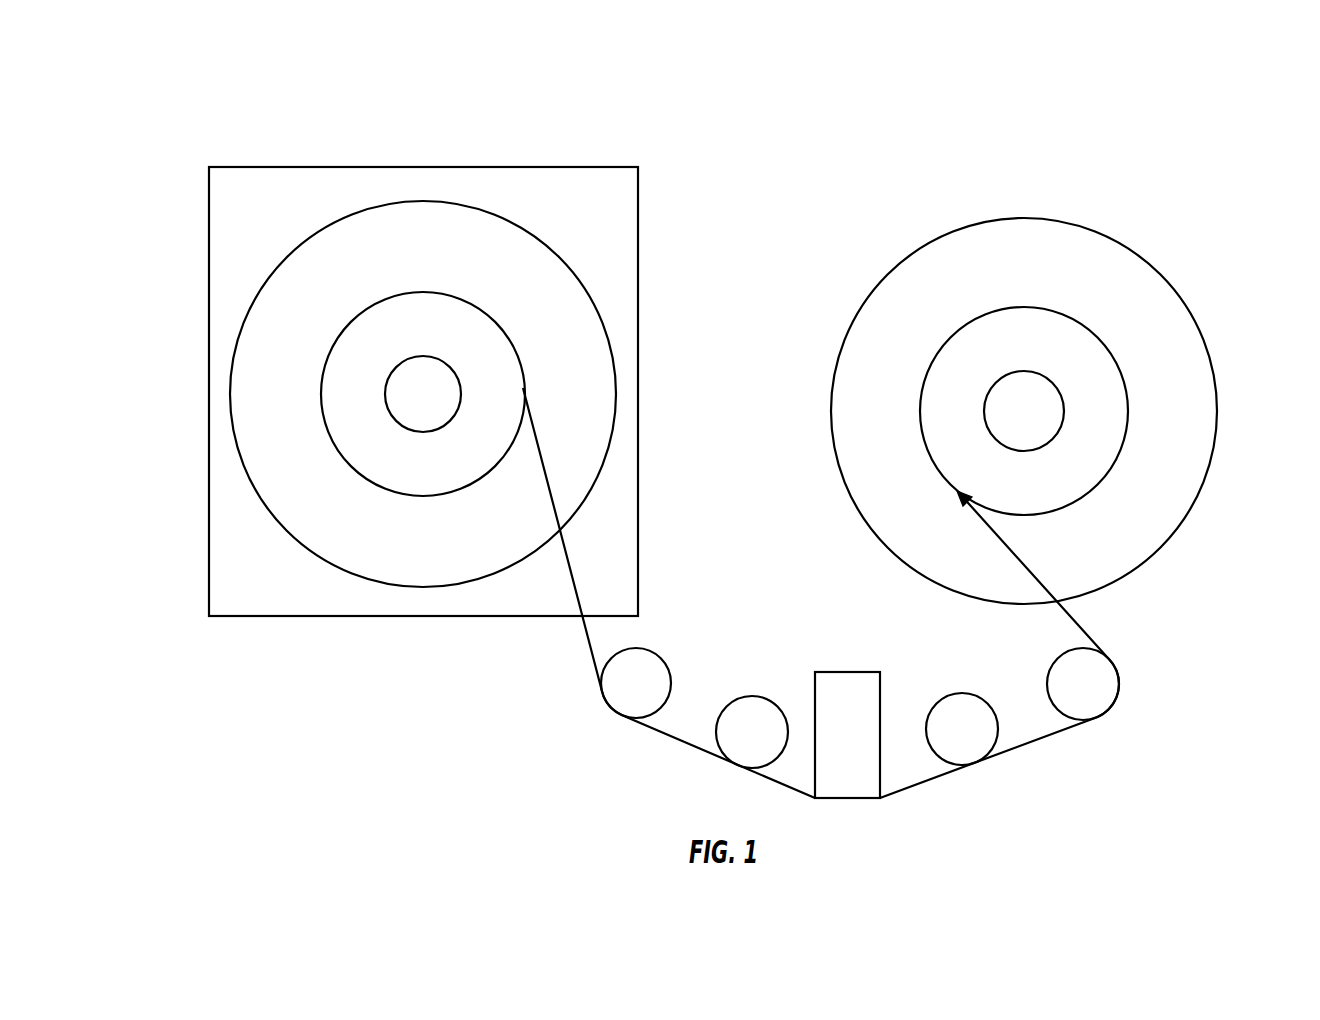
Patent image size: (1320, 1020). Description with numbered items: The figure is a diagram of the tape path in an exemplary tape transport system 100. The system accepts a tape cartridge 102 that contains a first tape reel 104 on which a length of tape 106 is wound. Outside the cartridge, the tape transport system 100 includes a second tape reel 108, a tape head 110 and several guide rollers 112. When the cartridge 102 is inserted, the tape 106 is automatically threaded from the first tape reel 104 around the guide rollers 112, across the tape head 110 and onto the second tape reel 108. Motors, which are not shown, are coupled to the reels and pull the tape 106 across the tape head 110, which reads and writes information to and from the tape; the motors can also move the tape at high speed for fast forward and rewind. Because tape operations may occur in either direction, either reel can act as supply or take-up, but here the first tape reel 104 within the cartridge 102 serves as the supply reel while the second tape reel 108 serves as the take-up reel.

The tape transport system 100 is at (1220, 104).
The tape cartridge 102 is at (209, 217).
The first tape reel 104 is at (248, 310).
The tape 106 is at (577, 580).
The second tape reel 108 is at (1215, 410).
The tape head 110 is at (847, 672).
The guide rollers 112 is at (752, 696).